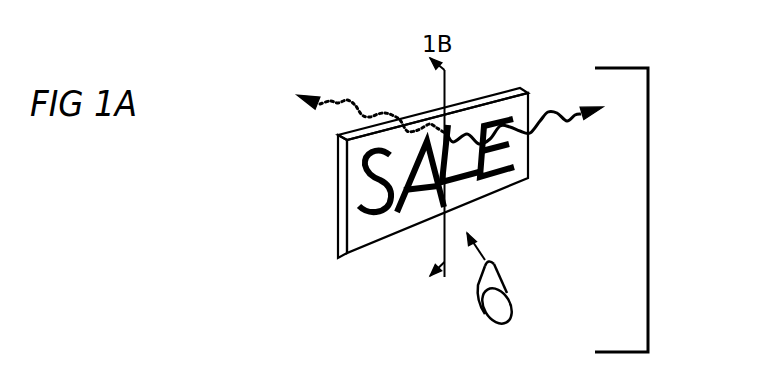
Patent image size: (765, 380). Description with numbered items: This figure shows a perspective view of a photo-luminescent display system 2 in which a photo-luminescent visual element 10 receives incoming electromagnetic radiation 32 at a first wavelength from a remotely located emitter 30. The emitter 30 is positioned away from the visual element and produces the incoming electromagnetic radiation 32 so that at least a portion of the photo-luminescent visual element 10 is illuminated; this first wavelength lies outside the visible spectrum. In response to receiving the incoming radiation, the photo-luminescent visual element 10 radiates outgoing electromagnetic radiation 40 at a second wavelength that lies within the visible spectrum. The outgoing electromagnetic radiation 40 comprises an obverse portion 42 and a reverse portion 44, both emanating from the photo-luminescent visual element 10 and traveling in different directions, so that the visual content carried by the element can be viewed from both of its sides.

The display system 2 is at (648, 241).
The sign substrate 10 is at (338, 209).
The light source 30 is at (478, 295).
The light beam 32 is at (477, 252).
The light wave 40 is at (363, 117).
The transmitted light 42 is at (565, 117).
The reflected light 44 is at (350, 100).